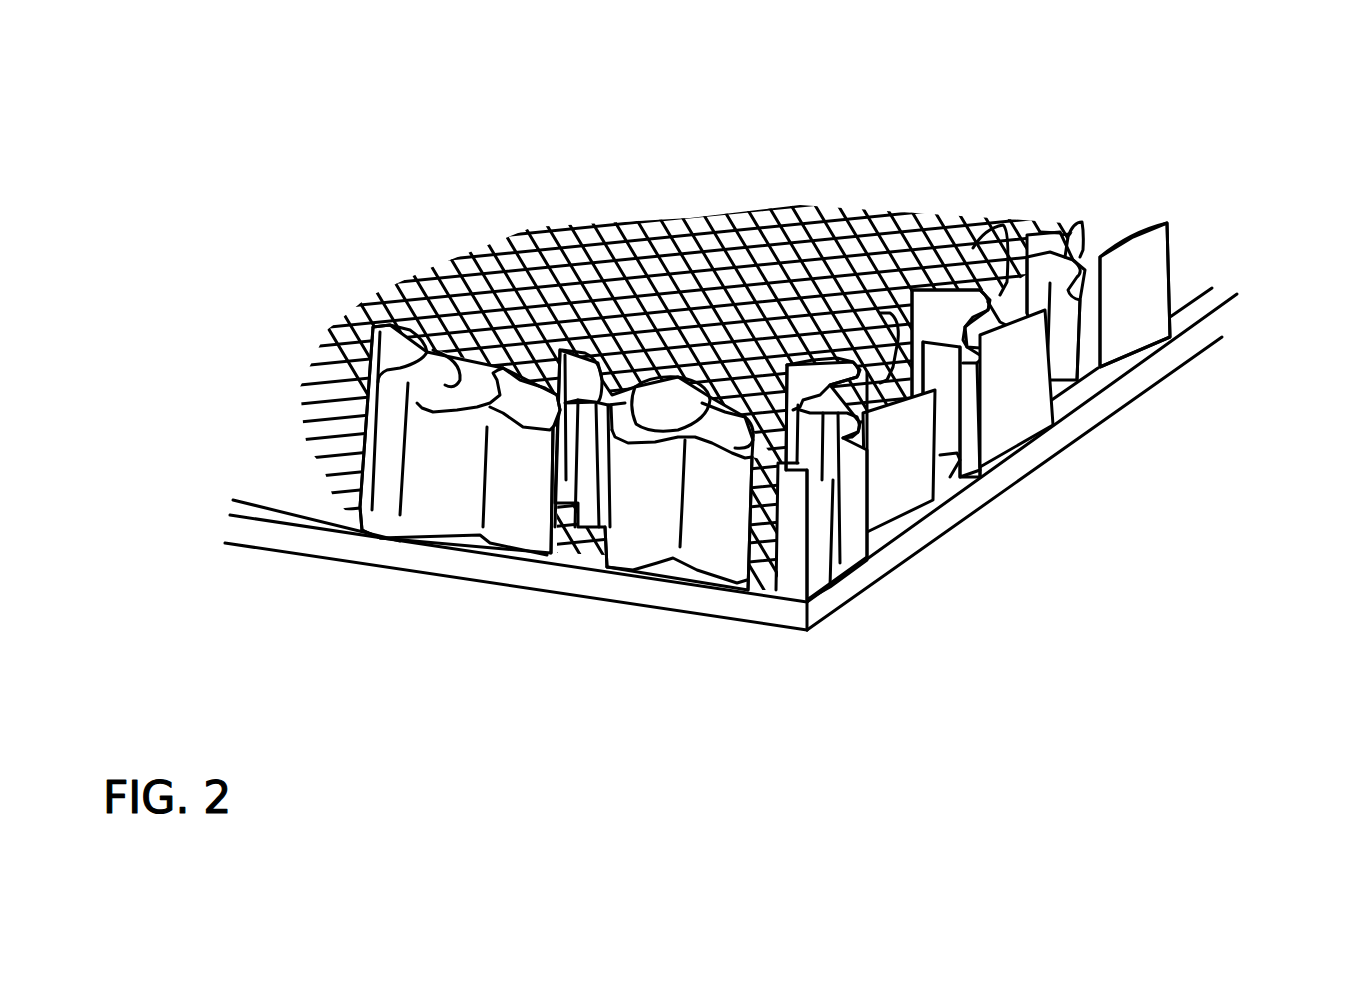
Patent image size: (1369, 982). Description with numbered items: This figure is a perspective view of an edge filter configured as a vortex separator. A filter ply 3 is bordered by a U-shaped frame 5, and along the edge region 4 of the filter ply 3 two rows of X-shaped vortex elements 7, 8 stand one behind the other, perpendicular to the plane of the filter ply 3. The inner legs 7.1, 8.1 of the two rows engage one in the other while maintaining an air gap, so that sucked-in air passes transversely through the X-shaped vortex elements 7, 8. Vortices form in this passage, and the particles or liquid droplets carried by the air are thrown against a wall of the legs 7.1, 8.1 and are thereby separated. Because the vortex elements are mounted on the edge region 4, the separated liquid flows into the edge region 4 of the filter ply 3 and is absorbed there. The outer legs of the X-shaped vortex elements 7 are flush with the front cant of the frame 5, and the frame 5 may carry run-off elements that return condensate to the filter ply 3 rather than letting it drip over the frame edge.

The filter ply 3 is at (735, 265).
The edge region 4 is at (654, 462).
The U-shaped frame 5 is at (1005, 468).
The X-shaped vortex element 7 is at (1143, 288).
The inner leg 7.1 is at (553, 387).
The X-shaped vortex element 8 is at (433, 342).
The inner leg 8.1 is at (623, 414).